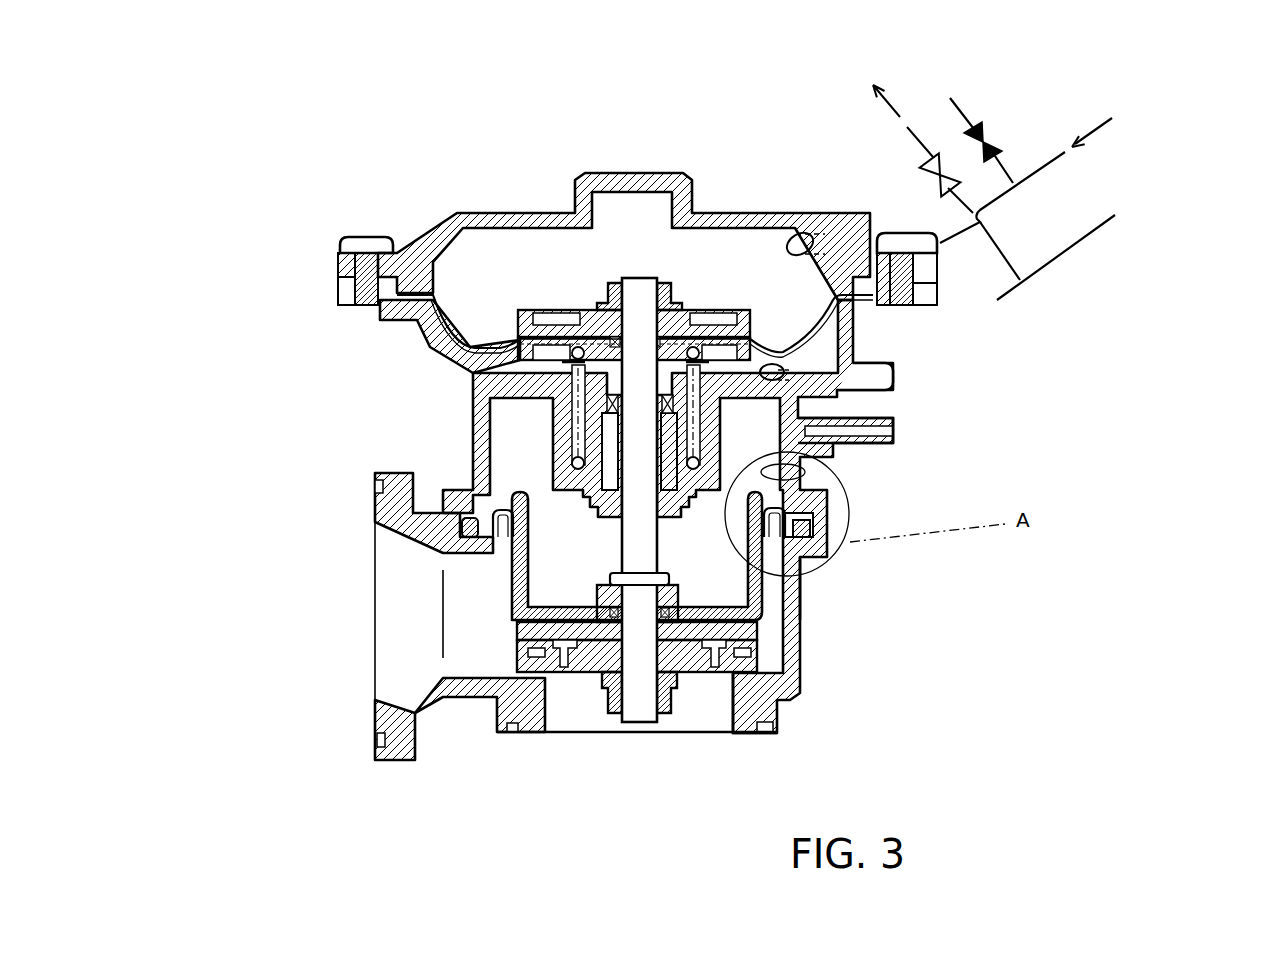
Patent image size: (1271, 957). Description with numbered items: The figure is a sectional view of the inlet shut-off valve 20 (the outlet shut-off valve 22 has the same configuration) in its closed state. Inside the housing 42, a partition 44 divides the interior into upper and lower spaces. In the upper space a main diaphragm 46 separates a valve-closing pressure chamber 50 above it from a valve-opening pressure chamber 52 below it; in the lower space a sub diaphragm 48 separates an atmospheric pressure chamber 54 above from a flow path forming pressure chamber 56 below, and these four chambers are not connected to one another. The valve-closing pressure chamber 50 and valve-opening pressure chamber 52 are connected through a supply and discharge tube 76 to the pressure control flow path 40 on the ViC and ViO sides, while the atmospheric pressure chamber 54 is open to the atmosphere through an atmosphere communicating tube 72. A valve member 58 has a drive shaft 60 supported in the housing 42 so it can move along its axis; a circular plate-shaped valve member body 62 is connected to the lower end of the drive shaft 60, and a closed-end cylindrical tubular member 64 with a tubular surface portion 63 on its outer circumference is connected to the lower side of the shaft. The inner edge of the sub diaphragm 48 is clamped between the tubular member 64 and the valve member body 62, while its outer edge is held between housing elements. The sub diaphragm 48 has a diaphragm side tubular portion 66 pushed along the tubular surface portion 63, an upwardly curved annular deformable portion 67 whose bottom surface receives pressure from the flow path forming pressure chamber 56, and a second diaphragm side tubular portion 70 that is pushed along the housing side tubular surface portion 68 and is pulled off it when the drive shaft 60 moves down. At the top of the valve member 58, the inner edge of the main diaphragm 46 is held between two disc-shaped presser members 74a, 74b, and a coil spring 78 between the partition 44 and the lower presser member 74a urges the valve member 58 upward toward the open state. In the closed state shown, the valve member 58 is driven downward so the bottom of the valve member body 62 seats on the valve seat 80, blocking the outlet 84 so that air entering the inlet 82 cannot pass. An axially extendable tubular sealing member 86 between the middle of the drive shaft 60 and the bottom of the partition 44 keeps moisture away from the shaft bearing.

The inlet shut-off valve 20 is at (641, 160).
The outlet shut-off valve 22 is at (609, 473).
The pressure control flow path 40 is at (1047, 163).
The housing 42 is at (793, 648).
The partition 44 is at (511, 378).
The main diaphragm 46 is at (783, 340).
The sub diaphragm 48 is at (787, 567).
The valve-closing pressure chamber 50 is at (498, 245).
The valve-opening pressure chamber 52 is at (457, 377).
The atmospheric pressure chamber 54 is at (517, 443).
The flow path forming pressure chamber 56 is at (773, 618).
The valve member 58 is at (640, 710).
The drive shaft 60 is at (690, 318).
The valve member body 62 is at (580, 667).
The tubular surface portion 63 is at (770, 503).
The tubular member 64 is at (493, 477).
The diaphragm side tubular portion 66 is at (770, 577).
The annular deformable portion 67 is at (503, 540).
The housing side tubular surface portion 68 is at (767, 475).
The second diaphragm side tubular portion 70 is at (813, 523).
The atmosphere communicating tube 72 is at (880, 416).
The lower presser member 74a is at (677, 322).
The upper presser member 74b is at (592, 322).
The supply and discharge tube 76 is at (870, 363).
The coil spring 78 is at (557, 338).
The valve seat 80 is at (533, 662).
The inlet 82 is at (415, 700).
The outlet 84 is at (712, 700).
The tubular sealing member 86 is at (593, 507).